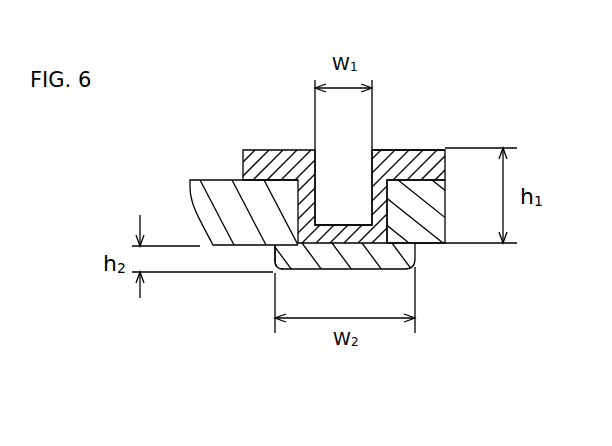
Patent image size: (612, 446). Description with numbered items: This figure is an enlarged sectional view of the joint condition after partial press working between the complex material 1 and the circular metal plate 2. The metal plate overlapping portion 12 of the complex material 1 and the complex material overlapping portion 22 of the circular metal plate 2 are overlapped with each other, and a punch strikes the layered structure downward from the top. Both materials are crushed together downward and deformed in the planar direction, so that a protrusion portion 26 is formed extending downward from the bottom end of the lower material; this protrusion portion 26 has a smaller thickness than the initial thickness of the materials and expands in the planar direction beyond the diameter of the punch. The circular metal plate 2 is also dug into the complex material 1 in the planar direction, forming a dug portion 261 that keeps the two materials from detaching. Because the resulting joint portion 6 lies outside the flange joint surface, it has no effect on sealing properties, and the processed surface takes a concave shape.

The complex material 1 is at (440, 247).
The metal plate overlapping portion 12 is at (425, 247).
The circular metal plate 2 is at (440, 150).
The complex material overlapping portion 22 is at (416, 150).
The protrusion portion 26 is at (310, 265).
The dug portion 261 is at (277, 252).
The joint portion 6 is at (352, 223).